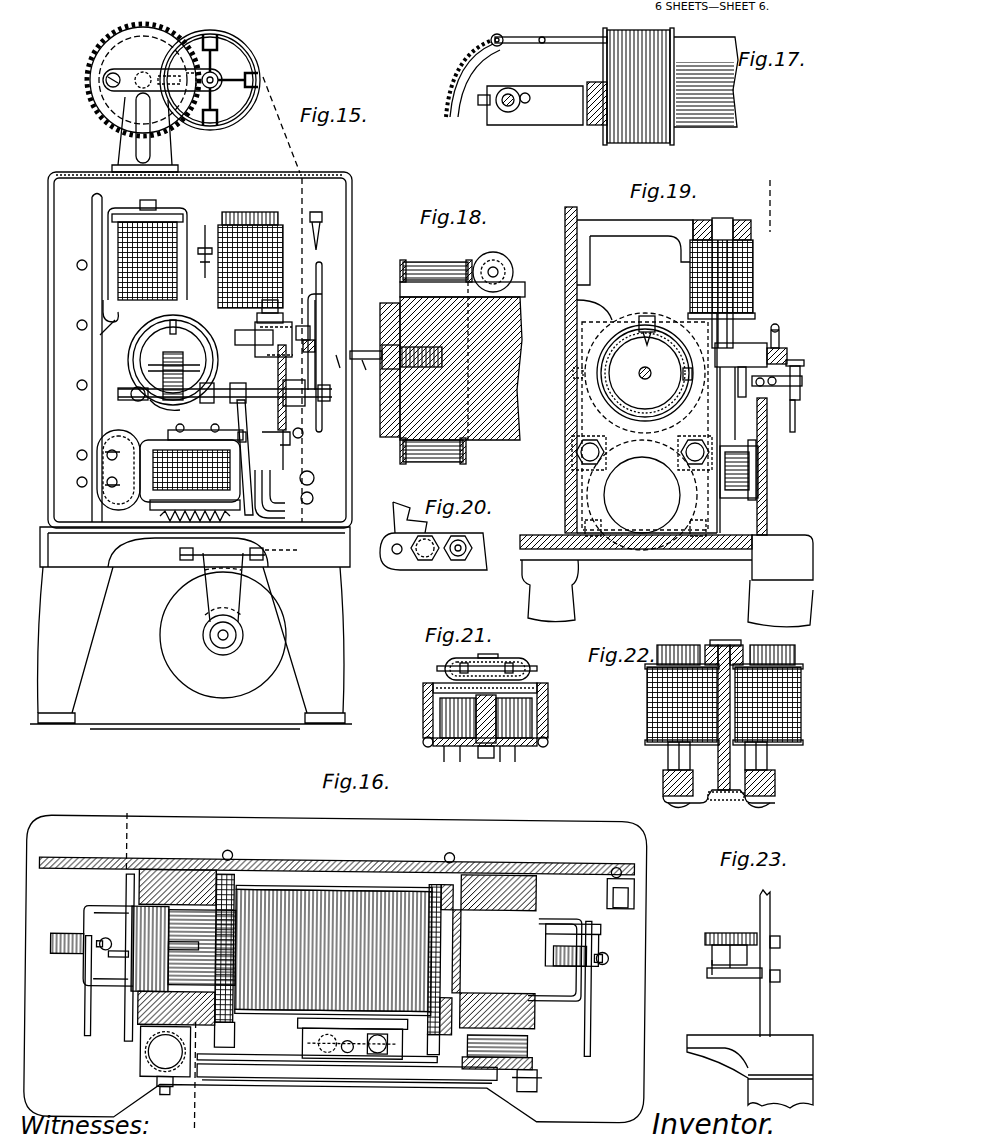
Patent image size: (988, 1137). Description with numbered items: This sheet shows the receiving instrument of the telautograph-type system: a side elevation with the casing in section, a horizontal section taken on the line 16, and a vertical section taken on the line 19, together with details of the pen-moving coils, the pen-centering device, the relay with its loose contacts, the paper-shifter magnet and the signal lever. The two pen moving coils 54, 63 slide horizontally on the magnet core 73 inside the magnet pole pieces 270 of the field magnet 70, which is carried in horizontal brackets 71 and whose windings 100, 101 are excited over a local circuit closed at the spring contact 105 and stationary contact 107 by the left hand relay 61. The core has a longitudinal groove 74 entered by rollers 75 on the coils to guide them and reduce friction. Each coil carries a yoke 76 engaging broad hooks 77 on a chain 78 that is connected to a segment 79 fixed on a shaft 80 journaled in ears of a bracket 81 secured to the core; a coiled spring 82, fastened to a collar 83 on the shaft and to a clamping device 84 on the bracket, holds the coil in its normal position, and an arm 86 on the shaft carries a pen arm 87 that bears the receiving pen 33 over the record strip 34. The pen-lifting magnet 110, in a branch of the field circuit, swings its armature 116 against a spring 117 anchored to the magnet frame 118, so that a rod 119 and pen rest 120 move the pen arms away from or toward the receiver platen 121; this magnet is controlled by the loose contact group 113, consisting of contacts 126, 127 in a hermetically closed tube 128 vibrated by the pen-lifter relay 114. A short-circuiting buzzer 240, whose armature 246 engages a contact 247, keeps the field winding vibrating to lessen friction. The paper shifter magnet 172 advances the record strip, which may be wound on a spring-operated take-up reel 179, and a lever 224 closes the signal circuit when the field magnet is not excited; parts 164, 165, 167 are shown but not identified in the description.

In FIG. 15, the section line 16 is at (100, 335).
In FIG. 18, the section line 16 is at (362, 362).
In FIG. 16, the section line 19 is at (161, 963).
In FIG. 15, the receiving pen 33 is at (303, 436).
In FIG. 15, the record strip 34 is at (304, 173).
In FIG. 19, the record strip 34 is at (772, 239).
In FIG. 16, the coil 54 is at (490, 943).
In FIG. 15, the left hand relay 61 is at (118, 256).
In FIG. 15, the coil 63 is at (150, 370).
In FIG. 17, the coil 63 is at (632, 144).
In FIG. 18, the coil 63 is at (449, 262).
In FIG. 19, the coil 63 is at (639, 322).
In FIG. 16, the coil 63 is at (170, 940).
In FIG. 16, the magnet 70 is at (345, 857).
In FIG. 15, the horizontal bracket 71 is at (118, 352).
In FIG. 19, the horizontal bracket 71 is at (585, 318).
In FIG. 16, the horizontal bracket 71 is at (178, 868).
In FIG. 15, the magnet core 73 is at (136, 362).
In FIG. 17, the magnet core 73 is at (706, 82).
In FIG. 18, the magnet core 73 is at (526, 346).
In FIG. 19, the magnet core 73 is at (639, 373).
In FIG. 16, the magnet core 73 is at (570, 853).
In FIG. 15, the longitudinal groove 74 is at (184, 327).
In FIG. 18, the longitudinal groove 74 is at (522, 284).
In FIG. 19, the longitudinal groove 74 is at (654, 340).
In FIG. 16, the longitudinal groove 74 is at (237, 1018).
In FIG. 15, the roller 75 is at (168, 335).
In FIG. 18, the roller 75 is at (506, 259).
In FIG. 19, the roller 75 is at (649, 320).
In FIG. 16, the roller 75 is at (170, 945).
In FIG. 15, the yoke 76 is at (165, 362).
In FIG. 17, the yoke 76 is at (545, 44).
In FIG. 18, the yoke 76 is at (369, 351).
In FIG. 16, the yoke 76 is at (127, 985).
In FIG. 17, the hook 77 is at (491, 38).
In FIG. 16, the hook 77 is at (107, 937).
In FIG. 15, the chain 78 is at (165, 398).
In FIG. 17, the chain 78 is at (458, 70).
In FIG. 16, the chain 78 is at (60, 933).
In FIG. 17, the segment 79 is at (470, 70).
In FIG. 16, the segment 79 is at (648, 942).
In FIG. 15, the shaft 80 is at (212, 402).
In FIG. 17, the shaft 80 is at (509, 112).
In FIG. 16, the shaft 80 is at (87, 1006).
In FIG. 15, the bracket 81 is at (132, 393).
In FIG. 17, the bracket 81 is at (581, 125).
In FIG. 18, the bracket 81 is at (392, 303).
In FIG. 20, the bracket 81 is at (453, 566).
In FIG. 16, the bracket 81 is at (100, 905).
In FIG. 15, the coiled spring 82 is at (278, 372).
In FIG. 19, the coiled spring 82 is at (753, 343).
In FIG. 15, the collar 83 is at (241, 398).
In FIG. 15, the clamping device 84 is at (286, 440).
In FIG. 15, the arm 86 is at (322, 276).
In FIG. 19, the pen arm 87 is at (796, 426).
In FIG. 19, the winding 100 is at (656, 441).
In FIG. 19, the winding 101 is at (575, 366).
In FIG. 16, the winding 101 is at (333, 950).
In FIG. 15, the spring contact 105 is at (104, 318).
In FIG. 15, the contact 107 is at (203, 225).
In FIG. 19, the pen-lifting magnet 110 is at (750, 471).
In FIG. 16, the pen-lifting magnet 110 is at (385, 1055).
In FIG. 21, the loose contact group 113 is at (548, 717).
In FIG. 21, the pen-lifter relay 114 is at (423, 716).
In FIG. 19, the armature 116 is at (759, 477).
In FIG. 16, the armature 116 is at (405, 1038).
In FIG. 16, the spring 117 is at (330, 1062).
In FIG. 19, the magnet frame 118 is at (768, 506).
In FIG. 19, the rod 119 is at (797, 381).
In FIG. 16, the rod 119 is at (272, 1052).
In FIG. 19, the pen rest 120 is at (801, 396).
In FIG. 16, the pen rest 120 is at (350, 1052).
In FIG. 19, the receiver platen 121 is at (757, 448).
In FIG. 16, the receiver platen 121 is at (278, 1075).
In FIG. 21, the contact 126 is at (512, 659).
In FIG. 21, the contact 127 is at (448, 660).
In FIG. 21, the hermetically closed tube 128 is at (531, 668).
In FIG. 15, the screw 164 is at (312, 332).
In FIG. 19, the screw 164 is at (780, 348).
In FIG. 15, the block 165 is at (316, 346).
In FIG. 19, the block 165 is at (788, 357).
In FIG. 15, the plate 167 is at (255, 350).
In FIG. 19, the plate 167 is at (741, 355).
In FIG. 22, the plate 167 is at (665, 784).
In FIG. 15, the paper shifter magnet 172 is at (275, 226).
In FIG. 19, the paper shifter magnet 172 is at (697, 281).
In FIG. 22, the paper shifter magnet 172 is at (650, 720).
In FIG. 15, the take-up reel 179 is at (210, 80).
In FIG. 23, the lever 224 is at (727, 985).
In FIG. 15, the buzzer 240 is at (163, 478).
In FIG. 15, the armature 246 is at (246, 470).
In FIG. 15, the contact 247 is at (243, 432).
In FIG. 15, the magnet pole piece 270 is at (112, 458).
In FIG. 19, the magnet pole piece 270 is at (592, 418).
In FIG. 16, the magnet pole piece 270 is at (230, 872).